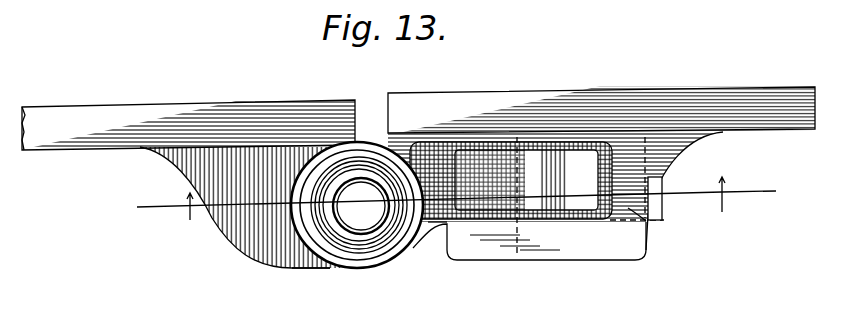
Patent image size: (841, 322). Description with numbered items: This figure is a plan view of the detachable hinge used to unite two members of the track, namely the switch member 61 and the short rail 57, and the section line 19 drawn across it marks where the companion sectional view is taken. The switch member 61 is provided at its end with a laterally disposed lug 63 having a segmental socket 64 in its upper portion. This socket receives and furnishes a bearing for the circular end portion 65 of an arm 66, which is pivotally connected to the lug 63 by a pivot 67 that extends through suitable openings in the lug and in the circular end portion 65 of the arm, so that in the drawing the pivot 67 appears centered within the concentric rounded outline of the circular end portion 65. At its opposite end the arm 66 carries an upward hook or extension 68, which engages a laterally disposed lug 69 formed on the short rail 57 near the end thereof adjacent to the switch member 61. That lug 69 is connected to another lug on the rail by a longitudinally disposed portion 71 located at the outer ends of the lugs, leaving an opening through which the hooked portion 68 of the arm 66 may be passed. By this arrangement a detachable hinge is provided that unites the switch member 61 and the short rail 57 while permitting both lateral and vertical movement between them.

The switch member 61 is at (134, 108).
The short rail 57 is at (537, 94).
The laterally disposed lug 63 is at (240, 236).
The segmental socket 64 is at (305, 250).
The circular end portion 65 is at (373, 261).
The arm 66 is at (511, 180).
The pivot 67 is at (359, 205).
The upward hook 68 is at (663, 201).
The laterally disposed lug 69 is at (646, 221).
The longitudinally disposed portion 71 is at (558, 259).
The section line 19 is at (456, 198).